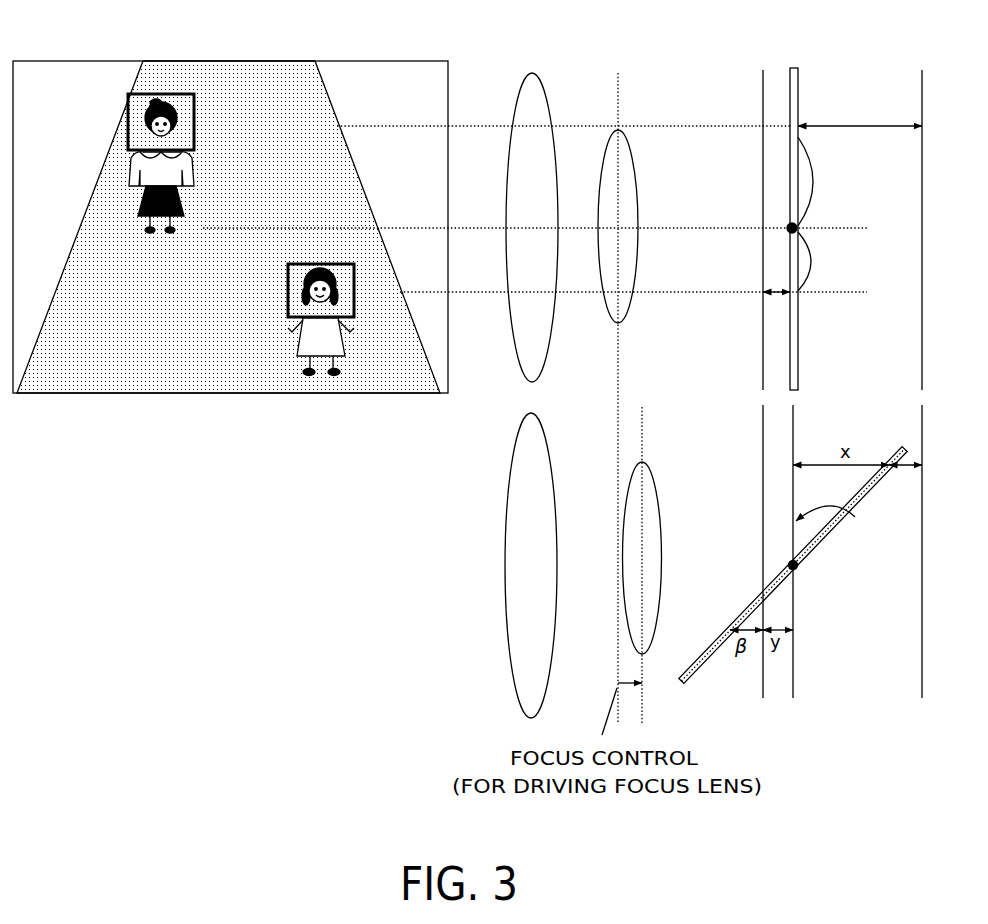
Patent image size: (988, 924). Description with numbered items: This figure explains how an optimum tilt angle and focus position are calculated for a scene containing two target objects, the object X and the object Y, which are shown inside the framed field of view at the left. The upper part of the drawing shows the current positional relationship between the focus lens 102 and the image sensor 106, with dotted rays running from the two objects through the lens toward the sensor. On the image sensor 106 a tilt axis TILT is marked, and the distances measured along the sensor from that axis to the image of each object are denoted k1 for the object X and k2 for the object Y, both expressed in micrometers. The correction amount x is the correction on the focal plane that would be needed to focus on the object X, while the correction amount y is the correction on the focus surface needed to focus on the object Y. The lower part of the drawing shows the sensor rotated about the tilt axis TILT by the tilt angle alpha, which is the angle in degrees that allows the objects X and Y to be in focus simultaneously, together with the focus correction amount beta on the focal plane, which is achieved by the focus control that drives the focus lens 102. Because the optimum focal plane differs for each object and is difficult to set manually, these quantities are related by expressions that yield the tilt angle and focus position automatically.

The focus lens 102 is at (618, 130).
The image sensor 106 is at (797, 96).
The object X is at (173, 94).
The object Y is at (300, 378).
The correction amount x is at (860, 113).
The correction amount y is at (776, 304).
The distance k1 is at (827, 181).
The distance k2 is at (827, 261).
The tilt angle α alpha is at (849, 526).
The focus correction amount β beta is at (905, 483).
The tilt axis TILT is at (789, 225).